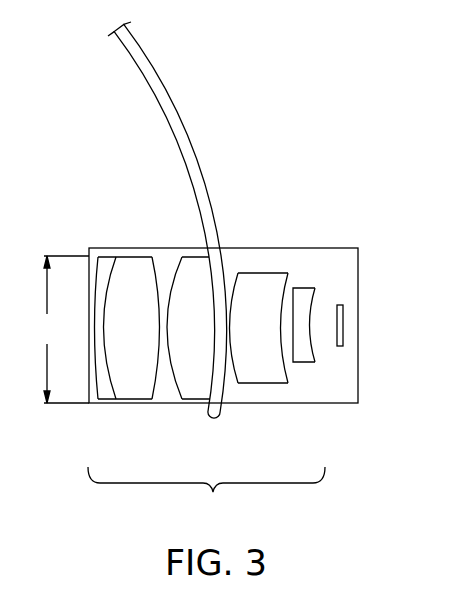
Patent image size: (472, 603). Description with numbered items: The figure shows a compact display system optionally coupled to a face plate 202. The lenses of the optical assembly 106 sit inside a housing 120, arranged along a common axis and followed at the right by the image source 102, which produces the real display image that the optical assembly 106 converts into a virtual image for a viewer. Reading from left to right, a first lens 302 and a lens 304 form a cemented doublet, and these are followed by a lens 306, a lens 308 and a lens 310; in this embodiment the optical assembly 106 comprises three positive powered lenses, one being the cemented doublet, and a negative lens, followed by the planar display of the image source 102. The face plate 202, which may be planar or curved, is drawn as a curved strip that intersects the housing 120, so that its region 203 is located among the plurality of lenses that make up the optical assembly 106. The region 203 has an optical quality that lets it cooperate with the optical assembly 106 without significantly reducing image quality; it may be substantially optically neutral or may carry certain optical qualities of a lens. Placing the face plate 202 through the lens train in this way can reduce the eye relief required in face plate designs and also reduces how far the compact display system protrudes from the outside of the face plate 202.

The image source 102 is at (343, 327).
The optical assembly 106 is at (206, 495).
The housing 120 is at (327, 247).
The face plate 202 is at (191, 140).
The region 203 is at (58, 329).
The first lens 302 is at (108, 403).
The lens 304 is at (142, 403).
The lens 306 is at (195, 403).
The lens 308 is at (262, 383).
The lens 310 is at (305, 362).